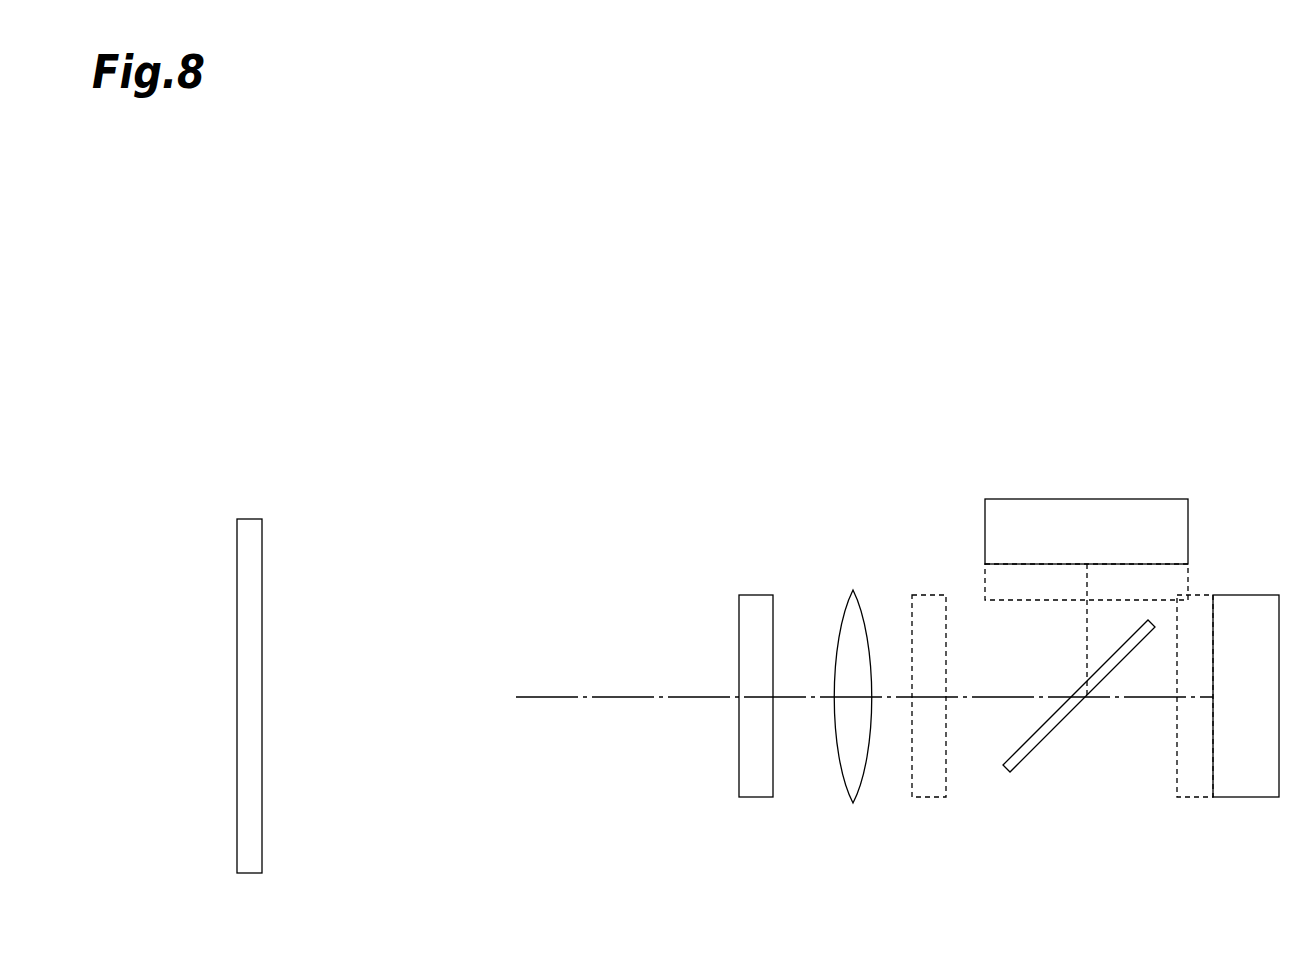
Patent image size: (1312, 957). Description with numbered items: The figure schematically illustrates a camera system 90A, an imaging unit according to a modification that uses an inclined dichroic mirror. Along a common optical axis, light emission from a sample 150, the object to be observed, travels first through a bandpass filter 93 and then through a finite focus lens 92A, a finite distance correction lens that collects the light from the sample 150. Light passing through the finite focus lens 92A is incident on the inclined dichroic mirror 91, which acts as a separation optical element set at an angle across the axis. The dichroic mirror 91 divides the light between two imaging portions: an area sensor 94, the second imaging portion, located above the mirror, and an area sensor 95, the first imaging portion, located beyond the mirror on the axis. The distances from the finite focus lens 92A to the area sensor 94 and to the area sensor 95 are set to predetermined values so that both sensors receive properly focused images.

The camera system 90A is at (783, 349).
The sample 150 is at (250, 518).
The bandpass filter 93 is at (757, 594).
The finite focus lens 92A is at (853, 589).
The area sensor 94 is at (1125, 499).
The inclined dichroic mirror 91 is at (1048, 745).
The area sensor 95 is at (1246, 594).